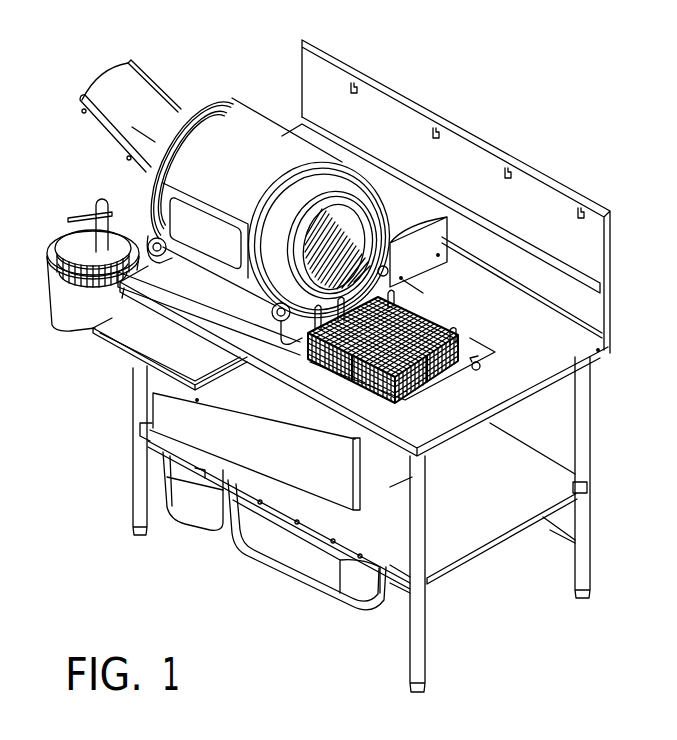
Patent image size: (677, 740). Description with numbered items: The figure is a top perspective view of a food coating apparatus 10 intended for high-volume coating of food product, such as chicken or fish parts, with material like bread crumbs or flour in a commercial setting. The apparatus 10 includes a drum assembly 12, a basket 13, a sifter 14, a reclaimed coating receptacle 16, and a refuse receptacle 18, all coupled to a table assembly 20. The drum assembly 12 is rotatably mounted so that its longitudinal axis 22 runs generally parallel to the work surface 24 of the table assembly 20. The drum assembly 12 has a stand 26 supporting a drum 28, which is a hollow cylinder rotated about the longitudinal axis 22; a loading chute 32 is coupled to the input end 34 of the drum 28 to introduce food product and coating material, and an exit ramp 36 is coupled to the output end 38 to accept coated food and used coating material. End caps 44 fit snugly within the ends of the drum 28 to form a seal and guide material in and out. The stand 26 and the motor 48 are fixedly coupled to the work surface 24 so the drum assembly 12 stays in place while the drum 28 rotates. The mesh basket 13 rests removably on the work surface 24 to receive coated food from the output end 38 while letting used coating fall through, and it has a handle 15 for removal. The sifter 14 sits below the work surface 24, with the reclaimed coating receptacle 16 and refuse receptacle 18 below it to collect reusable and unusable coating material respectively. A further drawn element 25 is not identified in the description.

The food coating apparatus 10 is at (578, 106).
The drum assembly 12 is at (233, 97).
The basket 13 is at (462, 338).
The sifter 14 is at (230, 413).
The handle 15 is at (465, 342).
The reclaimed coating receptacle 16 is at (287, 558).
The refuse receptacle 18 is at (190, 505).
The table assembly 20 is at (483, 508).
The longitudinal axis 22 is at (85, 133).
The work surface 24 is at (440, 303).
The drain fitting 25 is at (463, 342).
The stand 26 is at (243, 328).
The drum 28 is at (263, 140).
The loading chute 32 is at (141, 102).
The input end 34 is at (240, 104).
The exit ramp 36 is at (397, 233).
The output end 38 is at (348, 185).
The end caps 44 is at (178, 112).
The motor 48 is at (403, 217).